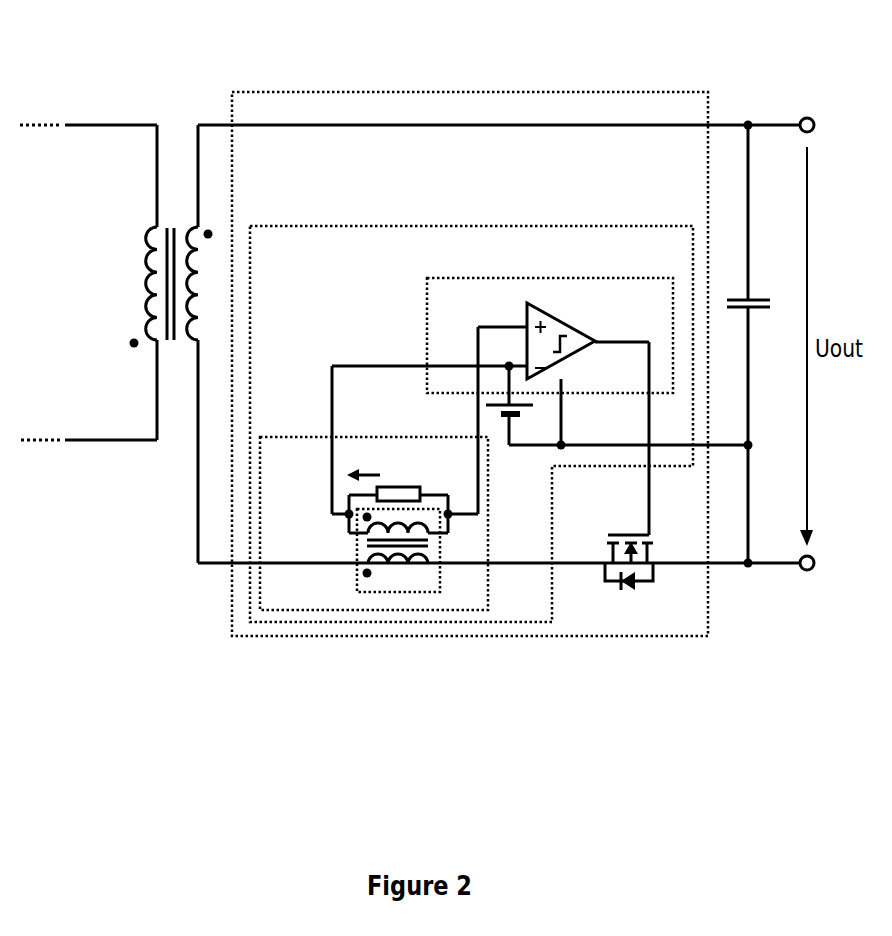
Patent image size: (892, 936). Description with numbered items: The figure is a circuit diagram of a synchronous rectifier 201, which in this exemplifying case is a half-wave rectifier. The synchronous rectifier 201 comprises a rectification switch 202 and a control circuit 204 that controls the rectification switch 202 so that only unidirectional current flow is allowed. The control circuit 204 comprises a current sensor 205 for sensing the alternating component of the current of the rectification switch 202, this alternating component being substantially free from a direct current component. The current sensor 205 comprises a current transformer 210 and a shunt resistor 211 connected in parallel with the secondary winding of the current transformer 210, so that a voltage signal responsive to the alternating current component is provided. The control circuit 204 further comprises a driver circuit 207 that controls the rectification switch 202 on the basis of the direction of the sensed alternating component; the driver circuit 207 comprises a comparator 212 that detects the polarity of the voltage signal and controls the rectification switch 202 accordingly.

The synchronous rectifier 201 is at (322, 92).
The rectification switch 202 is at (608, 555).
The control circuit 204 is at (318, 226).
The current sensor 205 is at (488, 553).
The driver circuit 207 is at (460, 278).
The current transformer 210 is at (358, 553).
The shunt resistor 211 is at (402, 487).
The comparator 212 is at (547, 310).